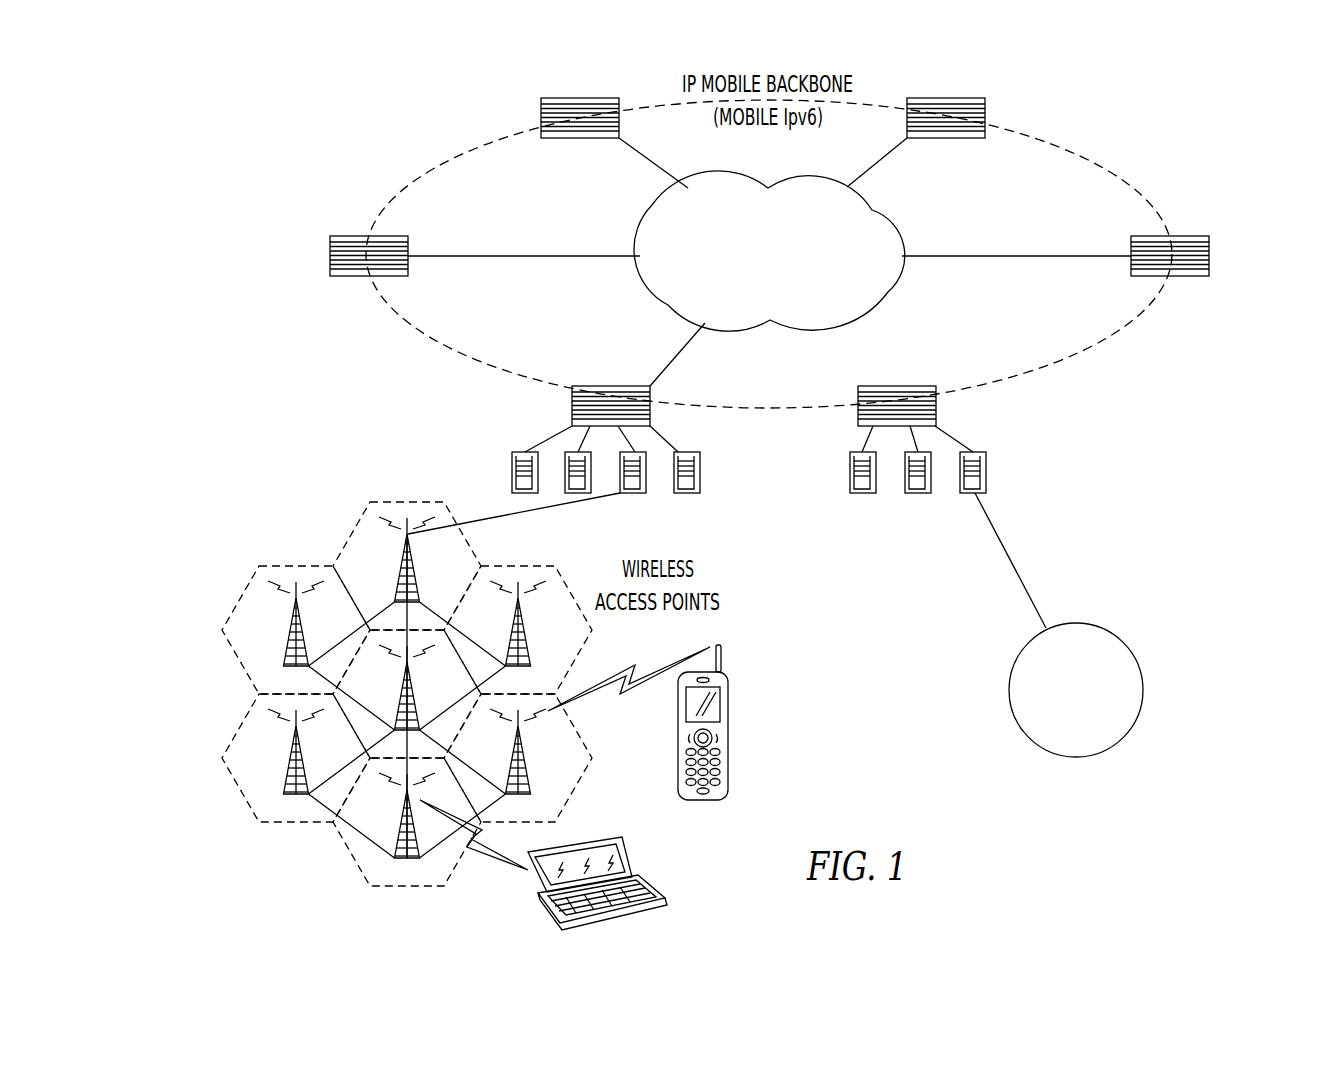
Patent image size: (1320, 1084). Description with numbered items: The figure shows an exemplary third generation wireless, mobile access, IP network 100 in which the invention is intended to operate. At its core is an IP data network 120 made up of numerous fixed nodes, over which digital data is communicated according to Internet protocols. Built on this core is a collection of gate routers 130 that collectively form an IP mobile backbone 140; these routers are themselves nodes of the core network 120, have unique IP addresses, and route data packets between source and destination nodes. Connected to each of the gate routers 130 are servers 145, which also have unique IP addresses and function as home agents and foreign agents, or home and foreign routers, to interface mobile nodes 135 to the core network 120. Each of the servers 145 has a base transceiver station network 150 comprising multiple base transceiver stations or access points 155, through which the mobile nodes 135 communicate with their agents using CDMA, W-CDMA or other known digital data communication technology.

The wireless mobile access IP network 100 is at (1128, 408).
The IP data network 120 is at (817, 301).
The gate routers 130 is at (540, 110).
The mobile nodes 135 is at (731, 737).
The IP mobile backbone 140 is at (439, 164).
The servers 145 is at (517, 452).
The base transceiver station network 150 is at (222, 804).
The access points 155 is at (398, 571).